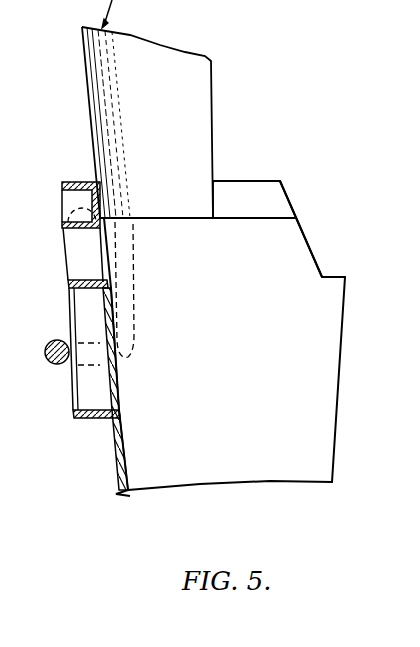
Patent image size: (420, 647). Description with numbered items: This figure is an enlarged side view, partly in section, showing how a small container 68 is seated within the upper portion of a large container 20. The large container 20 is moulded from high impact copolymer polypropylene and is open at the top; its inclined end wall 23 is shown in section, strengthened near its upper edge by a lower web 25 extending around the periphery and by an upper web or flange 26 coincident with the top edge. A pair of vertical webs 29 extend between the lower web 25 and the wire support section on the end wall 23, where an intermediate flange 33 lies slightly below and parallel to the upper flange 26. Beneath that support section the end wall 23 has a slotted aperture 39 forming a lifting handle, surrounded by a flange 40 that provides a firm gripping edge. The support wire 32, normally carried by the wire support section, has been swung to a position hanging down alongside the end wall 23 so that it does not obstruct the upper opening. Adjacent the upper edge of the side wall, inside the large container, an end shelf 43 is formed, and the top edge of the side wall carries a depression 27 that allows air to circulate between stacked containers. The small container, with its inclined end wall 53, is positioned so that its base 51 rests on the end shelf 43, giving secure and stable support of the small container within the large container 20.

The sheet holding assembly 68 is at (244, 14).
The end wall 53 is at (186, 95).
The rectangular container 20 is at (128, 497).
The end shelf 43 is at (278, 215).
The depression 27 is at (327, 267).
The upper web or flange 26 is at (71, 180).
The base 51 is at (183, 218).
The intermediate flange 33 is at (83, 229).
The slotted aperture 39 is at (95, 271).
The flange 40 is at (77, 294).
The vertical web 29 is at (83, 393).
The lower web 25 is at (82, 419).
The end wall 23 is at (117, 442).
The support wire 32 is at (127, 307).